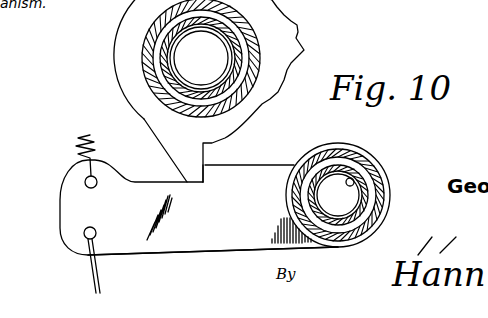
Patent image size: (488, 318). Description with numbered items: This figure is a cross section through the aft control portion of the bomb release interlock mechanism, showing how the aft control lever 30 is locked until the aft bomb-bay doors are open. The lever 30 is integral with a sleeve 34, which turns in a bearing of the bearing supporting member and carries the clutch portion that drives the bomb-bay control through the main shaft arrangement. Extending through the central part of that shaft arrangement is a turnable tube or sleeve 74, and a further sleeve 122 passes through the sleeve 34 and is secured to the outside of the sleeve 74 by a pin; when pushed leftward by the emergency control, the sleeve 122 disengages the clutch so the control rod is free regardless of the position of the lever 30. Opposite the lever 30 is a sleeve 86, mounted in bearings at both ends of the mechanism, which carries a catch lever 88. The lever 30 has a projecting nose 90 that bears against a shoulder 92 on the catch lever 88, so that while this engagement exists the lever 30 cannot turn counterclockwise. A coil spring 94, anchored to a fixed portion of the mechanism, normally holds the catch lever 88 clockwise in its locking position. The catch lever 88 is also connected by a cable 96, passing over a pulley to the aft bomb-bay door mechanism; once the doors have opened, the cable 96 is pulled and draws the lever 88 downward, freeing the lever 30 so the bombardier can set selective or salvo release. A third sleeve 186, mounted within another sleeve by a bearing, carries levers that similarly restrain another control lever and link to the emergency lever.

The lever 30 is at (280, 43).
The sleeve 34 is at (248, 95).
The tube or sleeve 74 is at (201, 90).
The sleeve 122 is at (163, 83).
The sleeve 86 is at (378, 198).
The catch lever 88 is at (227, 242).
The projecting nose 90 is at (185, 155).
The shoulder 92 is at (207, 175).
The coil spring 94 is at (76, 147).
The cable 96 is at (92, 272).
The third sleeve 186 is at (353, 181).